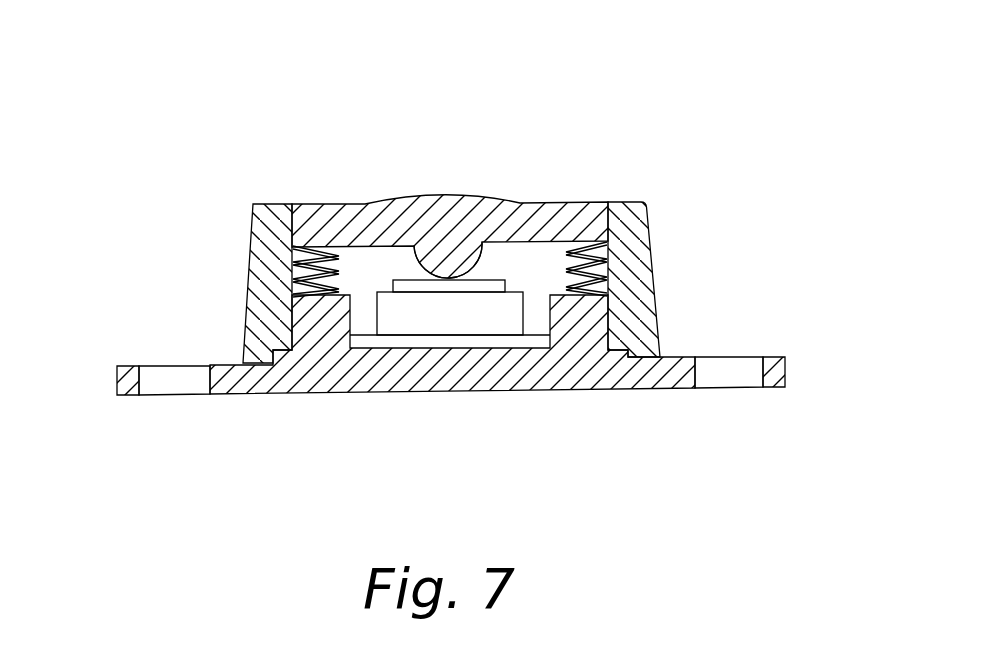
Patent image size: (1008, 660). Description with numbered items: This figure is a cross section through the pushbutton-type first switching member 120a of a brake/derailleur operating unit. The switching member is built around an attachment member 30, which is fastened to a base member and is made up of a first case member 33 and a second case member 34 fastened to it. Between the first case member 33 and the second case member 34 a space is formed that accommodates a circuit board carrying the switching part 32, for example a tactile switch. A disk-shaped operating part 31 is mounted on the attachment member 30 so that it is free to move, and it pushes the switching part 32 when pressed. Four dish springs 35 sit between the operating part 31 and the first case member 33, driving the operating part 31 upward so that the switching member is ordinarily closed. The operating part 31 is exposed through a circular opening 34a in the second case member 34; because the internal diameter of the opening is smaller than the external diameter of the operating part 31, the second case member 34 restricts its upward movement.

The attachment member 30 is at (505, 208).
The operating part 31 is at (472, 212).
The switching part 32 is at (403, 305).
The first case member 33 is at (473, 312).
The second case member 34 is at (568, 192).
The circular opening 34a is at (593, 203).
The dish spring 35 is at (313, 246).
The first switching member 120a is at (568, 192).